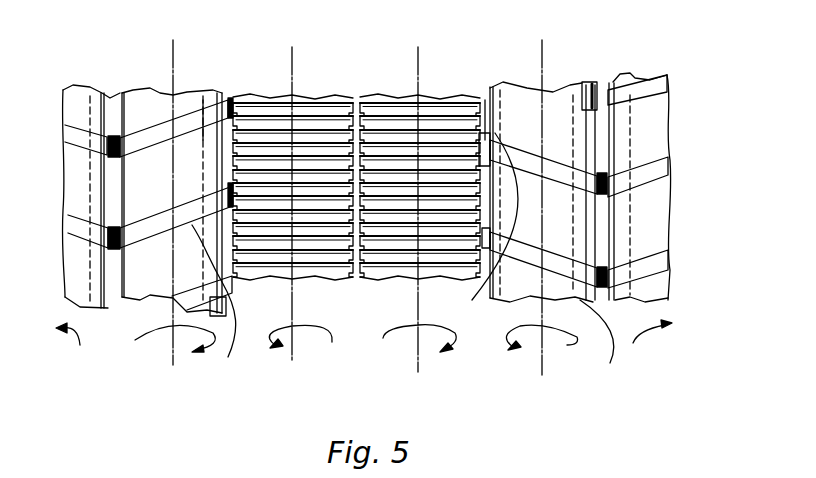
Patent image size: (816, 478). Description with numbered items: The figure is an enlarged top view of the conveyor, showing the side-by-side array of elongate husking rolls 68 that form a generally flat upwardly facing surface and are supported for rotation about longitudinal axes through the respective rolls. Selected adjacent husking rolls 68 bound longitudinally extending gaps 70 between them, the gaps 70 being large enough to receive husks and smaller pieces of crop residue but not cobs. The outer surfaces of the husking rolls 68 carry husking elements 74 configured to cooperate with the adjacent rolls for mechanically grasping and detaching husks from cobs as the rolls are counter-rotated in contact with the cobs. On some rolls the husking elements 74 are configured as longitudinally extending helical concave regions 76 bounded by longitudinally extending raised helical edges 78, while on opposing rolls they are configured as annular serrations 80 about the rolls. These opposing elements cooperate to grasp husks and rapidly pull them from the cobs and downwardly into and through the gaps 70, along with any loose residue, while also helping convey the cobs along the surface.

The husking rolls 68 is at (140, 87).
The gaps 70 is at (203, 117).
The husking elements 74 is at (152, 223).
The helical concave regions 76 is at (195, 170).
The raised helical edges 78 is at (710, 288).
The annular serrations 80 is at (432, 103).